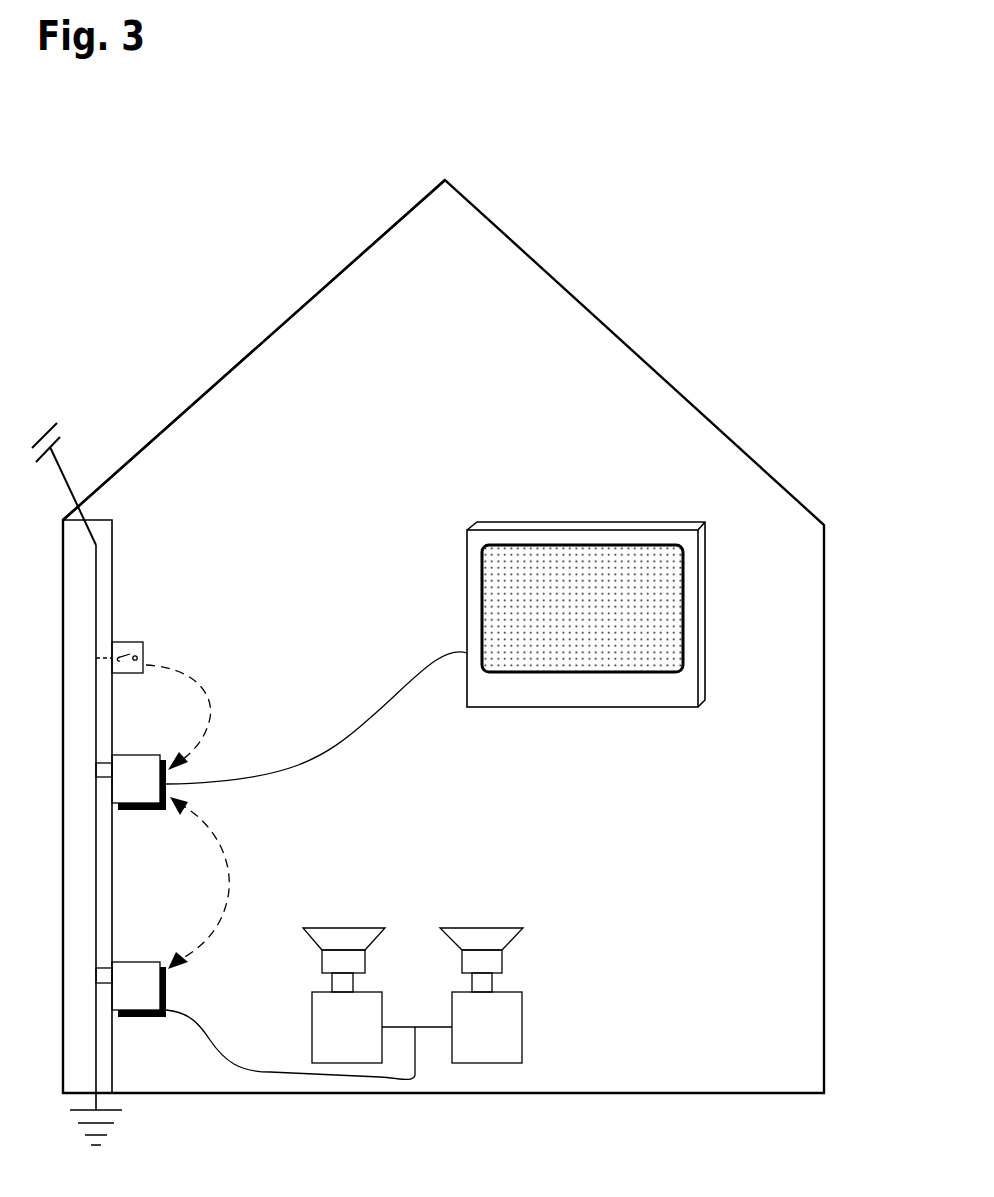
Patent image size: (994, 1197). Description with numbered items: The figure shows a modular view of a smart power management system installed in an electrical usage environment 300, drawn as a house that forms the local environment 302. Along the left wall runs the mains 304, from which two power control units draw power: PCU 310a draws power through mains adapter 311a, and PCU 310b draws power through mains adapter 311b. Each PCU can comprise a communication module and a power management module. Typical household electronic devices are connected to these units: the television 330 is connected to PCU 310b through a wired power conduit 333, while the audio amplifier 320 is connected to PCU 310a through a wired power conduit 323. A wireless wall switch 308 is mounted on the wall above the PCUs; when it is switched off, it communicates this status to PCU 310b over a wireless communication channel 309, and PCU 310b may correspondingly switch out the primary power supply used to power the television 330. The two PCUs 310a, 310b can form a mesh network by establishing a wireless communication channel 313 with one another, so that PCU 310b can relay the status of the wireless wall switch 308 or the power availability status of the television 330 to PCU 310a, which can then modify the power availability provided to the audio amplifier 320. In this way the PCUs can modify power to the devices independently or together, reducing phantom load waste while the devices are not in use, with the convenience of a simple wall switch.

The electrical usage environment 300 is at (654, 232).
The local environment 302 is at (246, 358).
The mains 304 is at (96, 594).
The wireless wall switch 308 is at (143, 655).
The wireless communication channel 309 is at (190, 752).
The PCU 310a is at (120, 1017).
The PCU 310b is at (120, 810).
The mains adapter 311a is at (104, 968).
The mains adapter 311b is at (104, 763).
The wireless communication channel 313 is at (222, 838).
The audio amplifier 320 is at (525, 1027).
The wired power conduit 323 is at (200, 1039).
The television 330 is at (588, 527).
The wired power conduit 333 is at (337, 722).